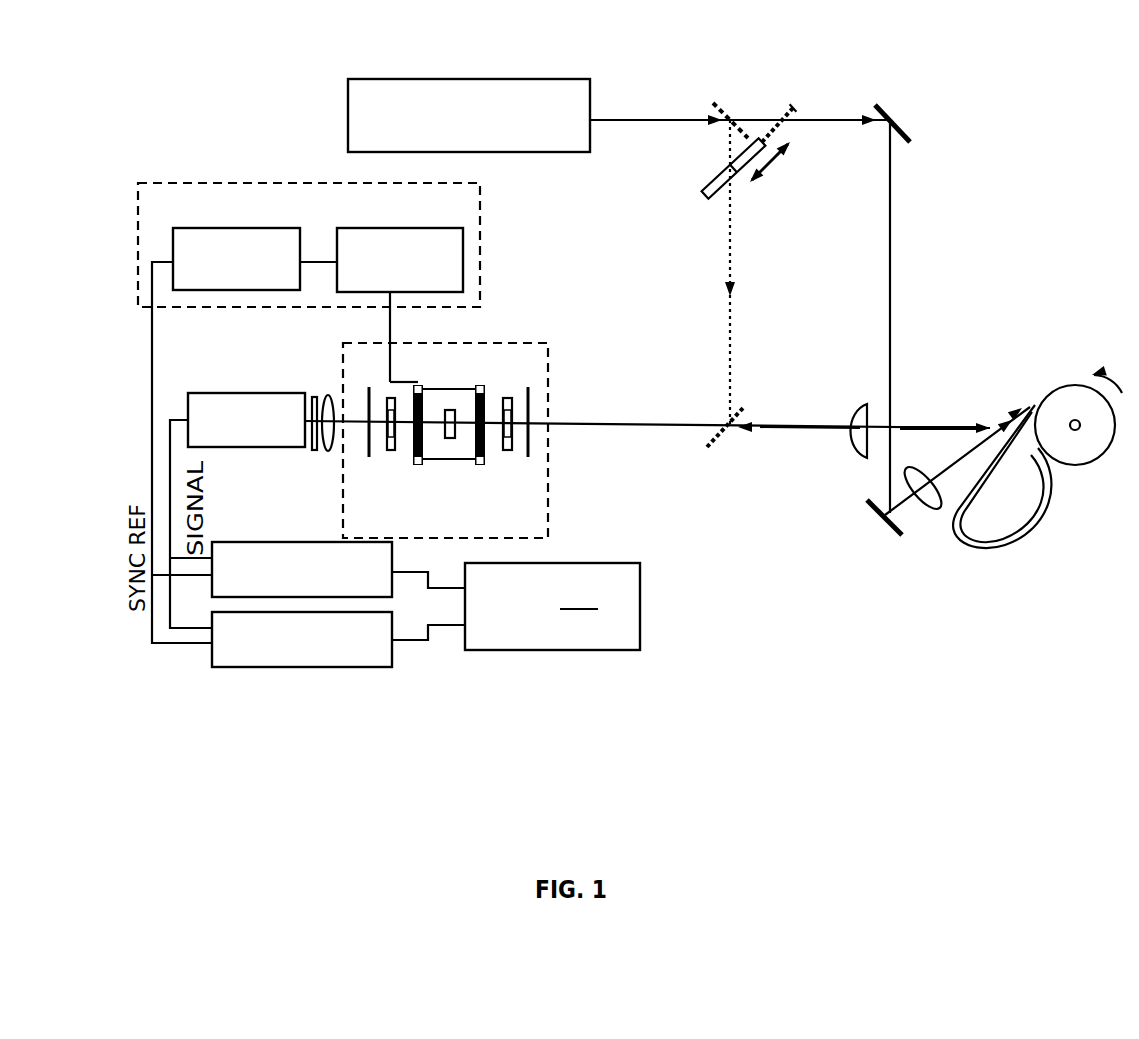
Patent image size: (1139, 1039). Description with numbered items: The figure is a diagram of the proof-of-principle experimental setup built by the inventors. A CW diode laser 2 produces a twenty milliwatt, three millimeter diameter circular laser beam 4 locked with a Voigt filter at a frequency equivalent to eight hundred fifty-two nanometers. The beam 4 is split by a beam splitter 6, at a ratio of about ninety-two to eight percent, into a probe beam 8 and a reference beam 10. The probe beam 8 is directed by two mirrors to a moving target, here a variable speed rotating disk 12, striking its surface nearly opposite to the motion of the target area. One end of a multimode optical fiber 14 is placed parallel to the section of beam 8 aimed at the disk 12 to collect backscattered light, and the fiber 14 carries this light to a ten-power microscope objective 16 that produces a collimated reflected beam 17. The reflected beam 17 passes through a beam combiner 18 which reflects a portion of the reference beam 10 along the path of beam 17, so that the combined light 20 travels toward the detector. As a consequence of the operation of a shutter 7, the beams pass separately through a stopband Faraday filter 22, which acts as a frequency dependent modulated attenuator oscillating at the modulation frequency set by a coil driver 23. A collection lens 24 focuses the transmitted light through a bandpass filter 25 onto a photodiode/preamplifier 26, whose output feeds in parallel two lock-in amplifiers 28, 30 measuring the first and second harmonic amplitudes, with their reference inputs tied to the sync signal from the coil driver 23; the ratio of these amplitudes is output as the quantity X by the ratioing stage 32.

The CW diode laser 2 is at (428, 79).
The laser beam 4 is at (641, 118).
The beam splitter 6 is at (742, 97).
The shutter 7 is at (784, 173).
The probe beam 8 is at (892, 158).
The reference beam 10 is at (727, 213).
The rotating disk 12 is at (1050, 365).
The multimode optical fiber 14 is at (958, 525).
The microscope objective 16 is at (850, 445).
The reflected beam 17 is at (807, 430).
The beam combiner 18 is at (722, 452).
The combined beam 20 is at (612, 425).
The stopband Faraday filter 22 is at (510, 343).
The coil driver 23 is at (165, 183).
The collection lens 24 is at (332, 397).
The bandpass filter 25 is at (315, 397).
The photodiode/preamplifier 26 is at (205, 393).
The lock-in amplifier 28 is at (238, 542).
The lock-in amplifier 30 is at (280, 668).
The ratio processor 32 is at (528, 652).